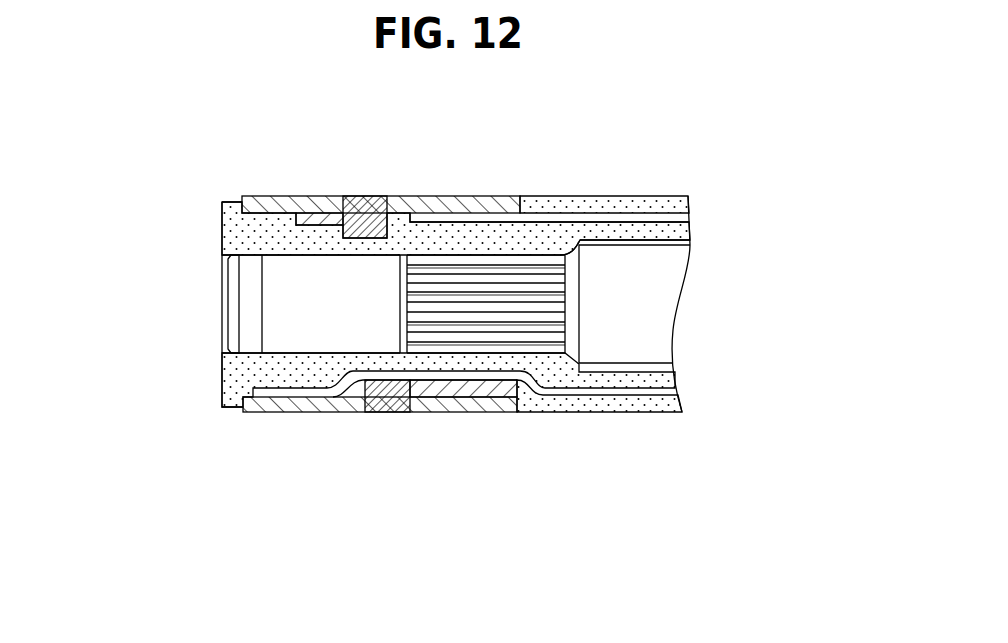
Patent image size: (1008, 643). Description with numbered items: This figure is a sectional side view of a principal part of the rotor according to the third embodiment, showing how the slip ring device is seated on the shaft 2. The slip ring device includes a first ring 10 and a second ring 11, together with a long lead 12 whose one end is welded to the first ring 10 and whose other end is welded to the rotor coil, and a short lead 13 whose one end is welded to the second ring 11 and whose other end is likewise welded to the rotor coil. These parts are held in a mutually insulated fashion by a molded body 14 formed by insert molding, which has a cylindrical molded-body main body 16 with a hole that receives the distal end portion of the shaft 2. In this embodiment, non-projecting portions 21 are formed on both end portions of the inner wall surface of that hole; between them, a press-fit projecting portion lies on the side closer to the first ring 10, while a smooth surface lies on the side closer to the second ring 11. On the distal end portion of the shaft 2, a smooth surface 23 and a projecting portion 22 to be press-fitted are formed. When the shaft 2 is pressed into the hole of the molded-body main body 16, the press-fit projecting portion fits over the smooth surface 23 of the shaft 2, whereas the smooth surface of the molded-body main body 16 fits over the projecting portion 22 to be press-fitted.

The first ring 10 is at (297, 196).
The second ring 11 is at (483, 196).
The long lead 12 is at (680, 389).
The short lead 13 is at (627, 218).
The molded body 14 is at (655, 412).
The molded-body main body 16 is at (378, 196).
The shaft 2 is at (645, 302).
The non-projecting portions 21 is at (237, 323).
The projecting portion to be press-fitted 22 is at (528, 328).
The smooth surface 23 is at (316, 318).